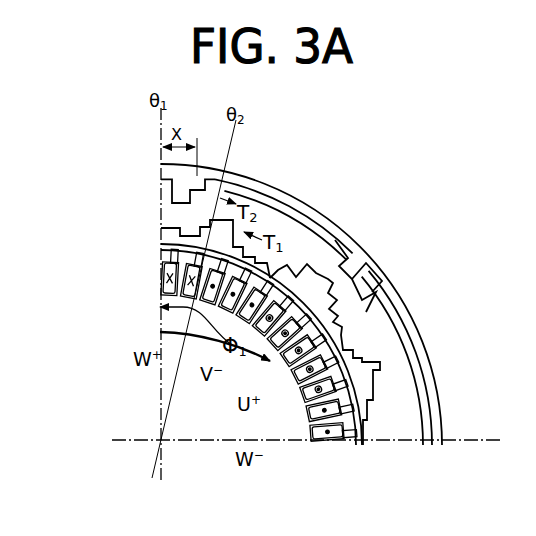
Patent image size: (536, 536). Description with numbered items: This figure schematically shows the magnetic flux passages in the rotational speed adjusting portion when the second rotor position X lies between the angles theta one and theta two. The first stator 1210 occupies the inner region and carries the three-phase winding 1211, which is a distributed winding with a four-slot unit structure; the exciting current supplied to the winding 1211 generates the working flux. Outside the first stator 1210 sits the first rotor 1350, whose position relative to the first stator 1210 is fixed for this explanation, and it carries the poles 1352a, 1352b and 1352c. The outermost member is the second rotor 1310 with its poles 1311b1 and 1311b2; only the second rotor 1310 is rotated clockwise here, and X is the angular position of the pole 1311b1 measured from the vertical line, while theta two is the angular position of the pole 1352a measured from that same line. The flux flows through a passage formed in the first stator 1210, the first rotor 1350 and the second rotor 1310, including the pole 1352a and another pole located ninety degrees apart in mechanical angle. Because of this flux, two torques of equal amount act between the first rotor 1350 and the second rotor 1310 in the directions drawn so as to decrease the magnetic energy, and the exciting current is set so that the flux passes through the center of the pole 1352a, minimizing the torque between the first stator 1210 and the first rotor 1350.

The second rotor 1310 is at (156, 166).
The pole 1311b1 is at (189, 207).
The pole 1311b2 is at (375, 279).
The first rotor 1350 is at (177, 230).
The pole 1352a is at (296, 250).
The pole 1352b is at (343, 255).
The pole 1352c is at (373, 381).
The first stator 1210 is at (156, 276).
The winding 1211 is at (336, 436).